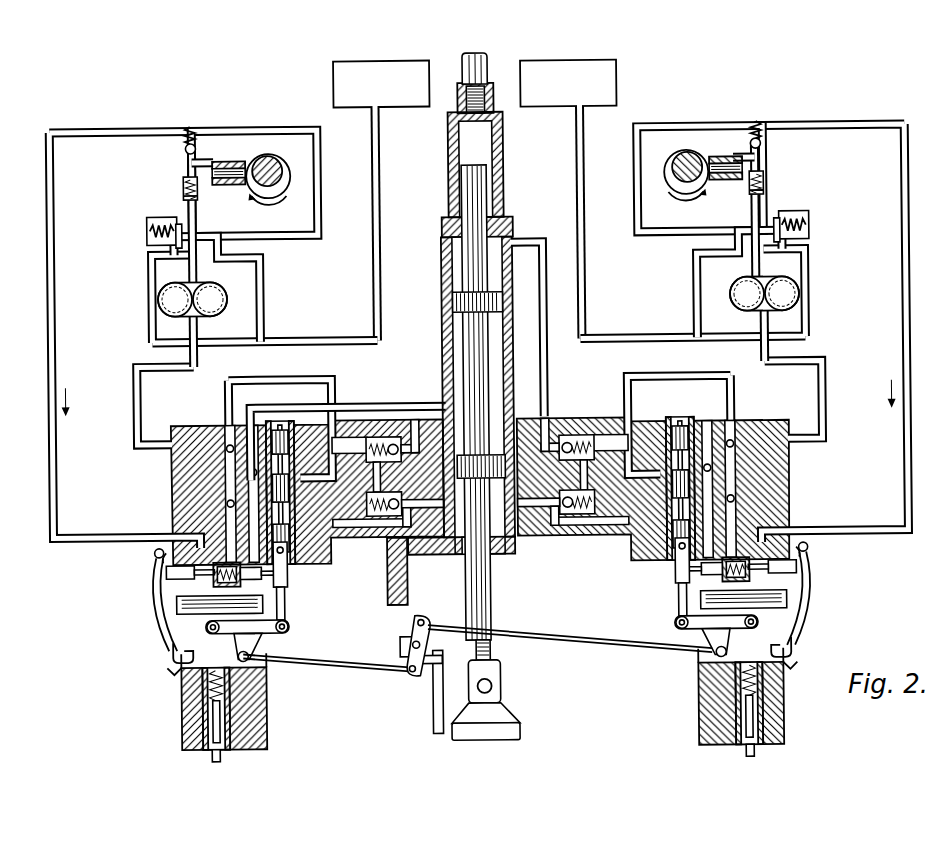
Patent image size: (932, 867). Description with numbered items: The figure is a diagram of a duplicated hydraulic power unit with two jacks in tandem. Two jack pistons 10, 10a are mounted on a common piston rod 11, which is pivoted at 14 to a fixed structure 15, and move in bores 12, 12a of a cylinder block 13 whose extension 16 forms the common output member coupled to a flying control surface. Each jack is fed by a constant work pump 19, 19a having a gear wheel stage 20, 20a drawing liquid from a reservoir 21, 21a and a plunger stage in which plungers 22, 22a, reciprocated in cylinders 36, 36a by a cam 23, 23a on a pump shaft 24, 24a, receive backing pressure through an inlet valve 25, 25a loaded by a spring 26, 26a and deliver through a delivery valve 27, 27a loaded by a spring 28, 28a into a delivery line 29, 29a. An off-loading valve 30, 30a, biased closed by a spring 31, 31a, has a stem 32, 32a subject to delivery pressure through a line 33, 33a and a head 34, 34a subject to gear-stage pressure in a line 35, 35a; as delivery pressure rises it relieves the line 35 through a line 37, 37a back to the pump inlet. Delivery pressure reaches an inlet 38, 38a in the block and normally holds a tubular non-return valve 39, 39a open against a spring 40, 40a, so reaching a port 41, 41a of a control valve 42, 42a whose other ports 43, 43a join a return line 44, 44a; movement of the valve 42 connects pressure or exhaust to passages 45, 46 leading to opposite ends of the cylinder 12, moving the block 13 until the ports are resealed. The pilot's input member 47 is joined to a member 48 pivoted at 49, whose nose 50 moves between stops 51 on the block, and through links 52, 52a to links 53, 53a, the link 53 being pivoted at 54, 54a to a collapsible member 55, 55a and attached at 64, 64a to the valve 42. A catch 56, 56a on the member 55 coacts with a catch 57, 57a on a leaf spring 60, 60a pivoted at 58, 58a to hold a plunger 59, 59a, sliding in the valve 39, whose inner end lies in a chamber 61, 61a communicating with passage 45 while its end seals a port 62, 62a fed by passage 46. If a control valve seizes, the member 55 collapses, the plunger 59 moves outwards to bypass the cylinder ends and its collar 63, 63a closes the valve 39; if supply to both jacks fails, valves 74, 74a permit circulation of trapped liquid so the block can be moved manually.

The jack piston 10 is at (466, 500).
The jack piston 10a is at (454, 300).
The piston rod 11 is at (479, 170).
The bore 12 is at (508, 540).
The bore 12a is at (508, 322).
The cylinder block 13 is at (450, 322).
The pivot 14 is at (490, 686).
The fixed structure 15 is at (505, 712).
The extension 16 is at (490, 65).
The constant work pump 19 is at (140, 187).
The constant work pump 19a is at (822, 177).
The first gear wheel stage 20 is at (225, 287).
The gear wheel stage 20a is at (735, 300).
The reservoir 21 is at (336, 80).
The reservoir 21a is at (620, 80).
The plunger 22 is at (241, 160).
The plunger 22a is at (730, 160).
The cam 23 is at (290, 168).
The cam 23a is at (704, 196).
The pump shaft 24 is at (270, 157).
The pump shaft 24a is at (695, 158).
The inlet valve 25 is at (186, 194).
The inlet valve 25a is at (767, 192).
The spring 26 is at (186, 182).
The spring 26a is at (767, 180).
The delivery valve 27 is at (187, 145).
The delivery valve 27a is at (765, 145).
The spring 28 is at (196, 125).
The spring 28a is at (765, 125).
The delivery line 29 is at (57, 320).
The delivery line 29a is at (903, 332).
The off-loading valve 30 is at (182, 221).
The off-loading valve 30a is at (756, 232).
The spring 31 is at (156, 219).
The spring 31a is at (811, 222).
The stem 32 is at (222, 232).
The stem 32a is at (738, 234).
The line 33 is at (322, 187).
The line 33a is at (650, 240).
The head 34 is at (176, 251).
The head 34a is at (803, 222).
The line 35 is at (198, 212).
The line 35a is at (768, 210).
The cylinder 36 is at (209, 160).
The cylinder 36a is at (748, 178).
The line 37 is at (150, 296).
The line 37a is at (811, 300).
The inlet 38 is at (172, 540).
The inlet 38a is at (787, 530).
The tubular non-return valve 39 is at (214, 575).
The non-return valve 39a is at (748, 576).
The spring 40 is at (230, 596).
The spring 40a is at (728, 596).
The port 41 is at (232, 420).
The port 41a is at (728, 474).
The control valve 42 is at (283, 422).
The control valve 42a is at (676, 422).
The ports 43 is at (255, 420).
The ports 43a is at (706, 420).
The return line 44 is at (142, 396).
The return line 44a is at (826, 392).
The passage 45 is at (427, 405).
The passage 46 is at (405, 537).
The pilot's input member 47 is at (431, 698).
The member 48 is at (437, 658).
The pivot 49 is at (424, 620).
The nose 50 is at (410, 644).
The stops 51 is at (410, 630).
The link 52 is at (300, 661).
The link 52a is at (594, 644).
The link 53 is at (262, 642).
The link 53a is at (690, 650).
The pivot 54 is at (206, 621).
The pivot 54a is at (758, 622).
The collapsible member 55 is at (190, 728).
The collapsible member 55a is at (770, 726).
The catch 56 is at (171, 661).
The catch 56a is at (800, 660).
The catch 57 is at (184, 645).
The catch 57a is at (792, 645).
The pivot 58 is at (153, 550).
The pivot 58a is at (807, 549).
The plunger 59 is at (165, 568).
The plunger 59a is at (795, 565).
The leaf spring 60 is at (156, 596).
The leaf spring 60a is at (804, 574).
The chamber 61 is at (283, 558).
The chamber 61a is at (678, 556).
The port 62 is at (286, 578).
The port 62a is at (674, 578).
The collar 63 is at (286, 590).
The collar 63a is at (683, 599).
The point of attachment 64 is at (287, 624).
The point of attachment 64a is at (675, 620).
The valve 74 is at (394, 440).
The valve 74a is at (566, 440).